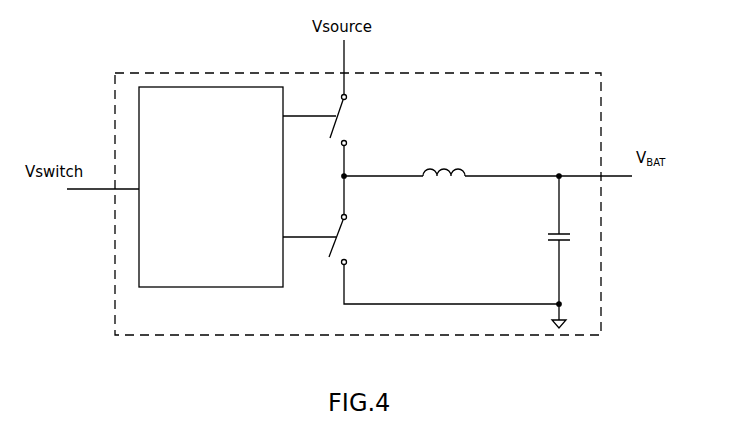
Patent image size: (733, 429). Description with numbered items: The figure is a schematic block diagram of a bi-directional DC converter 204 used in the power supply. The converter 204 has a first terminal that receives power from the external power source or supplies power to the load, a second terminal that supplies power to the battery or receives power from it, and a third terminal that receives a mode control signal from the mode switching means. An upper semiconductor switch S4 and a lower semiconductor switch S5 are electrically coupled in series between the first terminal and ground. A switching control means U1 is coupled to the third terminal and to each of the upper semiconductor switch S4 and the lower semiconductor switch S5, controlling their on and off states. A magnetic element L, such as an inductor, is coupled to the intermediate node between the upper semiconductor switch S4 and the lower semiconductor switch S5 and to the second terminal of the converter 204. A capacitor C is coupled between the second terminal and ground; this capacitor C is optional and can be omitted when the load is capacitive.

The bi-directional DC converter 204 is at (600, 138).
The switching control means U1 is at (215, 86).
The upper semiconductor switch S4 is at (333, 120).
The lower semiconductor switch S5 is at (337, 240).
The magnetic element L is at (444, 162).
The capacitor C is at (567, 240).